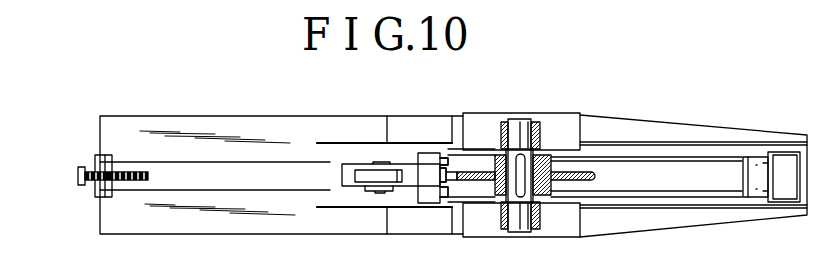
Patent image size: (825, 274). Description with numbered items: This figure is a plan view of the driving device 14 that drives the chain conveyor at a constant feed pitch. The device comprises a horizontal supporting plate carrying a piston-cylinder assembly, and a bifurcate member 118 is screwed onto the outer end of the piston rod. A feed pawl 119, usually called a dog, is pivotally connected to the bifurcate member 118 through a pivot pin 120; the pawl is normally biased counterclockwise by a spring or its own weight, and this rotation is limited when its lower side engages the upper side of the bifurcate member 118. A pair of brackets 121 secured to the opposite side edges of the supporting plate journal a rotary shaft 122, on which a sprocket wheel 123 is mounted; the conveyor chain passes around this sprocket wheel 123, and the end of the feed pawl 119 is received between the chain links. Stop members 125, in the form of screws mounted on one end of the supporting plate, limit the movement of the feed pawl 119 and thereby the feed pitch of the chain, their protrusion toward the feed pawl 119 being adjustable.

The driving device 14 is at (648, 116).
The bifurcate member 118 is at (412, 178).
The feed pawl 119 is at (363, 174).
The pivot pin 120 is at (381, 194).
The brackets 121 is at (558, 135).
The rotary shaft 122 is at (512, 118).
The sprocket wheel 123 is at (578, 172).
The stop members 125 is at (93, 186).